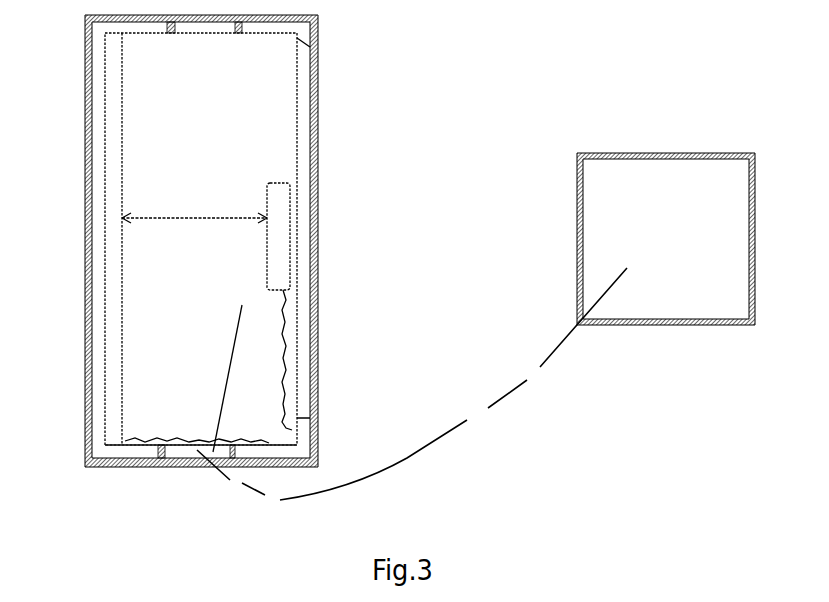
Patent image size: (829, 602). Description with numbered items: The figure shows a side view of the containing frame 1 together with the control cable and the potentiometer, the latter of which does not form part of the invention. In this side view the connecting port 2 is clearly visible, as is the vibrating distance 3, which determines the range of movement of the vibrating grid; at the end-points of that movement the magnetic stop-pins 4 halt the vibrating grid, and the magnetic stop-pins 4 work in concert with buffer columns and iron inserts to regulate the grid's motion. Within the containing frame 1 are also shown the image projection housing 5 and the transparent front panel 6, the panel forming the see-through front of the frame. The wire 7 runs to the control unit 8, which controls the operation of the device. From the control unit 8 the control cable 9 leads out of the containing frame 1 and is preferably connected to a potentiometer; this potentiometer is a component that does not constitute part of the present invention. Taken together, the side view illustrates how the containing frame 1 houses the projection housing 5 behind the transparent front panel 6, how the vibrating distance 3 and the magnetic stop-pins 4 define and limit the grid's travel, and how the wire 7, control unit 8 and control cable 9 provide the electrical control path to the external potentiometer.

The containing frame 1 is at (318, 160).
The connecting port 2 is at (168, 33).
The vibrating distance 3 is at (190, 214).
The magnetic stop-pins 4 is at (279, 215).
The image projection housing 5 is at (120, 260).
The transparent front panel 6 is at (297, 345).
The wire 7 is at (160, 443).
The control unit 8 is at (187, 440).
The control cable 9 is at (505, 398).